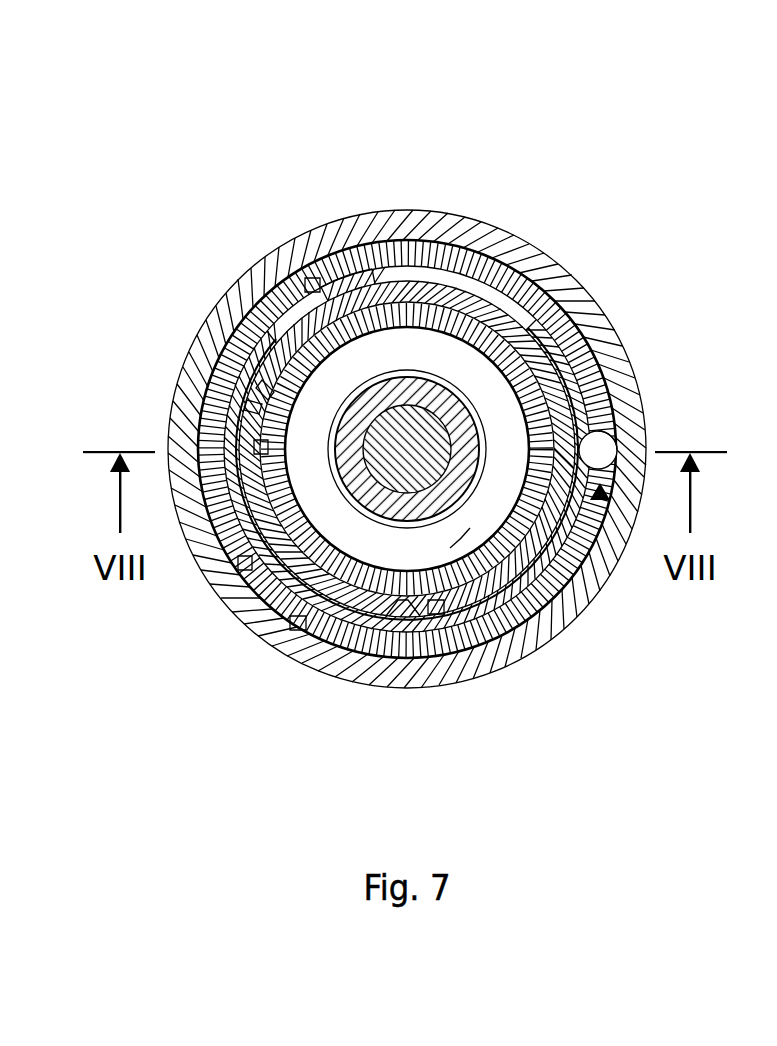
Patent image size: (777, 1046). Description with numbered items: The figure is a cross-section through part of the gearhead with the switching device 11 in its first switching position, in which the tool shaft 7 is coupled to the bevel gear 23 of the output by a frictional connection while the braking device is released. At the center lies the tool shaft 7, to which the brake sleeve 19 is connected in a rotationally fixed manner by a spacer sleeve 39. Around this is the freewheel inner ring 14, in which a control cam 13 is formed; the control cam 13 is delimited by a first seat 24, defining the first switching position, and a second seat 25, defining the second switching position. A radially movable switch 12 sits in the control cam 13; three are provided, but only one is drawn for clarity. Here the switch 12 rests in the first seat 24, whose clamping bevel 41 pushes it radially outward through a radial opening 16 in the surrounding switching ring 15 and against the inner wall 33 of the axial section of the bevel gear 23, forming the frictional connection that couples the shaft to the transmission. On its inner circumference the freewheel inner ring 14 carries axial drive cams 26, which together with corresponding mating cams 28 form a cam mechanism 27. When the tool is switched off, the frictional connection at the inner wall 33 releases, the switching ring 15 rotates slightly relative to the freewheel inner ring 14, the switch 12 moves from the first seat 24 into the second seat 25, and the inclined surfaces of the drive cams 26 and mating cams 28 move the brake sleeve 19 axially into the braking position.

The tool shaft 7 is at (412, 457).
The switching device 11 is at (600, 500).
The switch 12 is at (602, 442).
The control cam 13 is at (350, 290).
The freewheel inner ring 14 is at (487, 607).
The switching ring 15 is at (245, 563).
The radial opening 16 is at (310, 285).
The brake sleeve 19 is at (468, 330).
The bevel gear 23 is at (388, 227).
The first seat 24 is at (580, 425).
The second seat 25 is at (560, 553).
The drive cam 26 is at (268, 390).
The cam mechanism 27 is at (257, 407).
The mating cam 28 is at (260, 447).
The inner wall 33 is at (618, 457).
The spacer sleeve 39 is at (475, 533).
The clamping bevel 41 is at (592, 428).